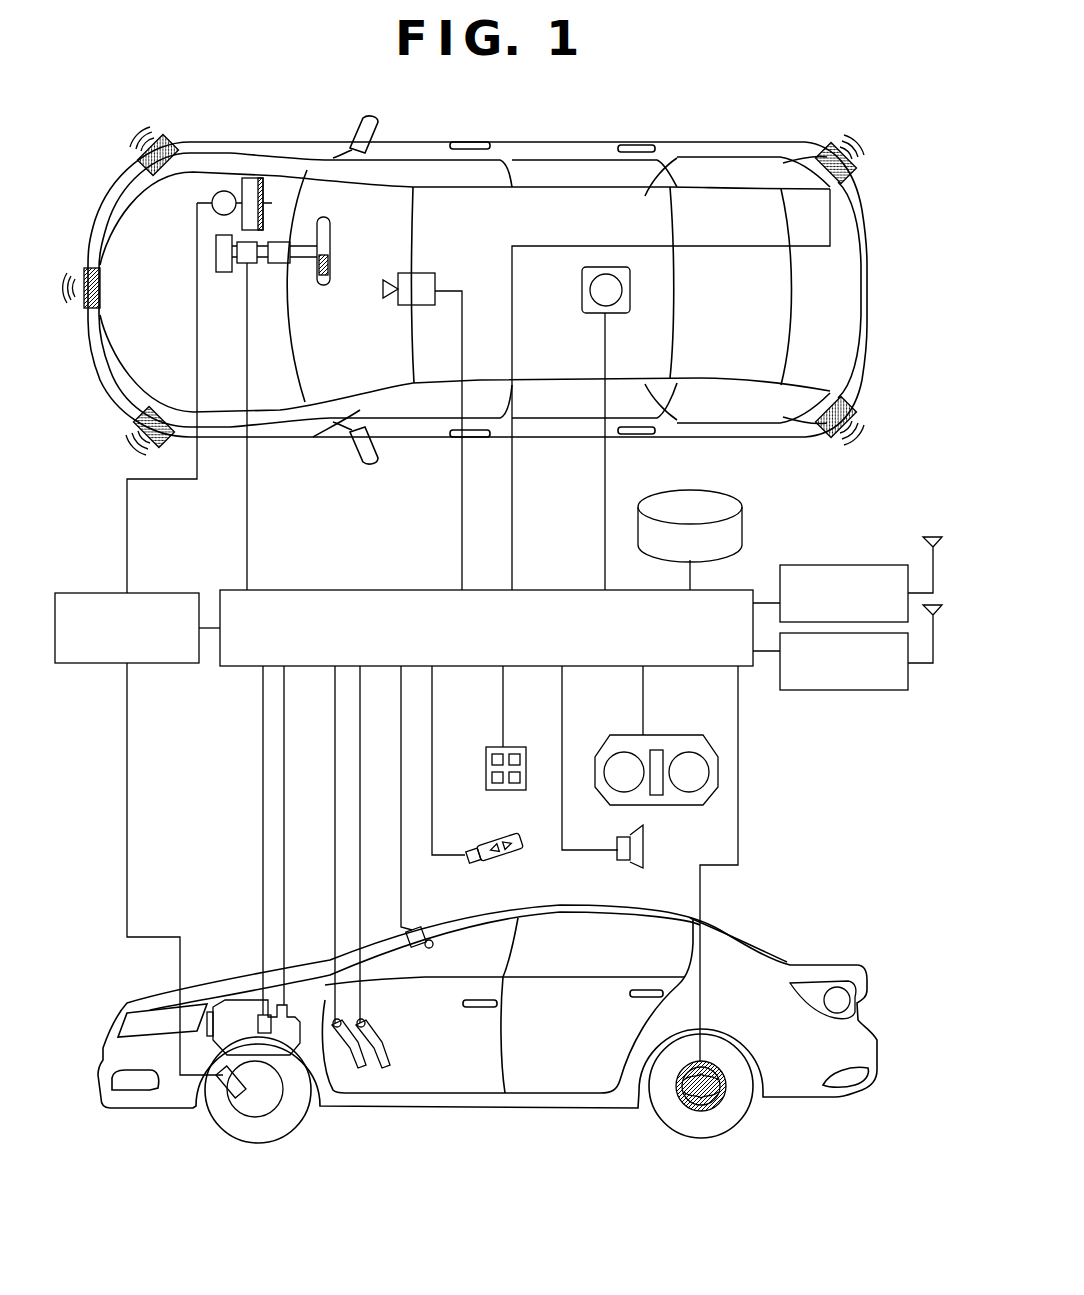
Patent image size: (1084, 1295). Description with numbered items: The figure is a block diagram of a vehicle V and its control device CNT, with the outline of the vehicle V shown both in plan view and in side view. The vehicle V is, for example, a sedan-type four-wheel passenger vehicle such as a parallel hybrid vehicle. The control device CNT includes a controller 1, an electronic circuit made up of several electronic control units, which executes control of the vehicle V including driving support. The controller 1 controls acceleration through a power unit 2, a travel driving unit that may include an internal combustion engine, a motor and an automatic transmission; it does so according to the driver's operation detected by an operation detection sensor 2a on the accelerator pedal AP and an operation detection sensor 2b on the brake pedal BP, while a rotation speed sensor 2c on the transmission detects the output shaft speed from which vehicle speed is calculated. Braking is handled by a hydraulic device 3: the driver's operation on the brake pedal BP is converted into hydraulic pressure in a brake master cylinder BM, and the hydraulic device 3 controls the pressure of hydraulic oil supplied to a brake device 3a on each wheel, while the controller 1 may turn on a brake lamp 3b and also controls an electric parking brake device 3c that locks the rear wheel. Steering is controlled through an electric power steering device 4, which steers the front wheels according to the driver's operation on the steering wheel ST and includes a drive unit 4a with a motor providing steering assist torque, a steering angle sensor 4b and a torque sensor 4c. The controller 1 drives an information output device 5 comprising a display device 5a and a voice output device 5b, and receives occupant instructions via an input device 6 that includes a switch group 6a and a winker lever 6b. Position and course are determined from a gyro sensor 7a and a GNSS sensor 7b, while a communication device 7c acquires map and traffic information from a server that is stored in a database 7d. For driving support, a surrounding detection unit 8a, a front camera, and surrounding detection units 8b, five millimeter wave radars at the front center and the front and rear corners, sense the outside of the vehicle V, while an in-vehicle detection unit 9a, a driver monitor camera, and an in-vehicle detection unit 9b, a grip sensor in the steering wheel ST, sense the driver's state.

The controller 1 is at (427, 590).
The power unit 2 is at (320, 1049).
The operation detection sensor 2a is at (330, 1004).
The operation detection sensor 2b is at (365, 1025).
The rotation speed sensor 2c is at (261, 1013).
The hydraulic device 3 is at (99, 593).
The brake device 3a is at (228, 1092).
The brake lamp 3b is at (837, 987).
The electric parking brake device 3c is at (693, 1106).
The electric power steering device 4 is at (239, 235).
The drive unit 4a is at (257, 263).
The steering angle sensor 4b is at (217, 240).
The torque sensor 4c is at (280, 242).
The information output device 5 is at (646, 773).
The display device 5a is at (616, 756).
The voice output device 5b is at (617, 851).
The input device 6 is at (494, 772).
The switch group 6a is at (486, 763).
The winker lever 6b is at (486, 855).
The gyro sensor 7a is at (593, 313).
The GNSS sensor 7b is at (838, 565).
The communication device 7c is at (868, 690).
The database 7d is at (745, 521).
The surrounding detection unit 8a is at (415, 273).
The surrounding detection unit 8b is at (172, 140).
The in-vehicle detection unit 9a is at (418, 929).
The in-vehicle detection unit 9b is at (331, 264).
The brake master cylinder BM is at (228, 191).
The steering wheel ST is at (332, 223).
The accelerator pedal AP is at (358, 1086).
The brake pedal BP is at (392, 1086).
The vehicle V is at (882, 192).
The control device CNT is at (862, 509).